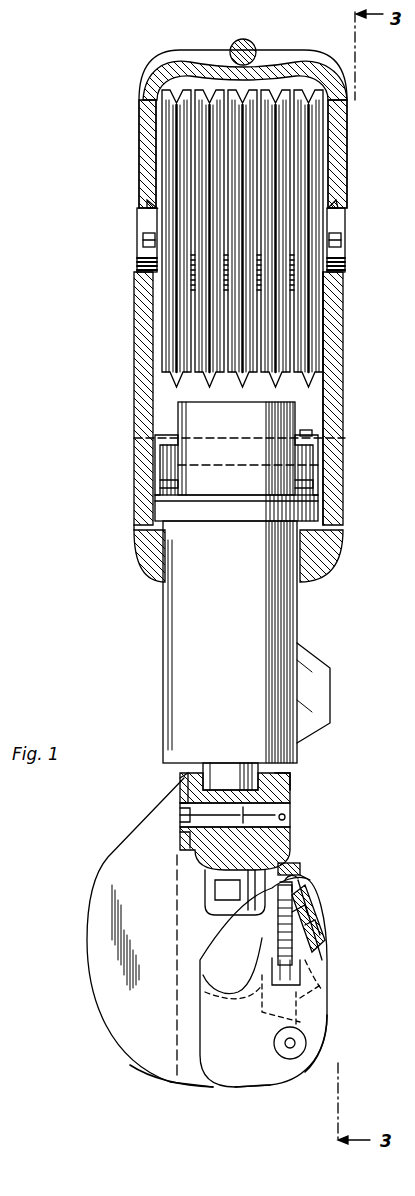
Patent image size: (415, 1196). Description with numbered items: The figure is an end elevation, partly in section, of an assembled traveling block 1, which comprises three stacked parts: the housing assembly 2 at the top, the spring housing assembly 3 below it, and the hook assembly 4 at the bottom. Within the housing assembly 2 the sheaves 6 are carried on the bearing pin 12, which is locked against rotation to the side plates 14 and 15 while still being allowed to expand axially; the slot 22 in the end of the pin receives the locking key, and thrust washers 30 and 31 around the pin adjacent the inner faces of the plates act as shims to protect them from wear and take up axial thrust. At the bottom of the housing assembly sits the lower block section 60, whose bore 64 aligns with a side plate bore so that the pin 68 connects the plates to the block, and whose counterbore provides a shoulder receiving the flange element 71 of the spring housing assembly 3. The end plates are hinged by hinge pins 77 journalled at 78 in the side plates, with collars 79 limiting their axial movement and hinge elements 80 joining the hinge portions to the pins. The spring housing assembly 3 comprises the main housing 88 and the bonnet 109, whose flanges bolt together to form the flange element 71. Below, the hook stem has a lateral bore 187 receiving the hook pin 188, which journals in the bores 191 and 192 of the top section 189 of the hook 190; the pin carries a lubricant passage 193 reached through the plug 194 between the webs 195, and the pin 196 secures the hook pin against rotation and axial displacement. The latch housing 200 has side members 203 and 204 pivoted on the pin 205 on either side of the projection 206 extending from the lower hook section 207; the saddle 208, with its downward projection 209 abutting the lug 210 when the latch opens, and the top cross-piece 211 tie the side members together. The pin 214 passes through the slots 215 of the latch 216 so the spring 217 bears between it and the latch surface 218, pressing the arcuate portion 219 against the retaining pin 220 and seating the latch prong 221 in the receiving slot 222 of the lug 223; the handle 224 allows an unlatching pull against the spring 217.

The traveling block 1 is at (346, 331).
The housing assembly 2 is at (345, 173).
The spring housing assembly 3 is at (213, 592).
The hook assembly 4 is at (116, 862).
The sheaves 6 is at (300, 388).
The bearing pin 12 is at (338, 226).
The side plate 14 is at (135, 327).
The side plate 15 is at (338, 392).
The slot 22 is at (141, 238).
The thrust washer 30 is at (140, 205).
The thrust washer 31 is at (333, 204).
The lower block section 60 is at (318, 565).
The bore 64 is at (330, 517).
The pin 68 is at (330, 488).
The flange element 71 is at (225, 510).
The hinge pin 77 is at (318, 440).
The journal 78 is at (340, 460).
The collar 79 is at (318, 433).
The hinge element 80 is at (165, 440).
The main housing 88 is at (247, 659).
The bonnet 109 is at (246, 441).
The lateral bore 187 is at (222, 793).
The hook pin 188 is at (235, 815).
The top section 189 is at (284, 790).
The hook 190 is at (299, 842).
The bore 191 is at (286, 795).
The bore 192 is at (184, 779).
The lubricant passage 193 is at (181, 845).
The plug 194 is at (180, 825).
The webs 195 is at (163, 893).
The pin 196 is at (290, 817).
The latch housing 200 is at (330, 1010).
The side member 203 is at (234, 1075).
The side member 204 is at (318, 945).
The pin 205 is at (283, 1047).
The projection 206 is at (276, 1027).
The lower hook section 207 is at (186, 1073).
The saddle 208 is at (205, 996).
The downward projection 209 is at (270, 1003).
The lug 210 is at (327, 1036).
The top cross-piece 211 is at (300, 864).
The pin 214 is at (282, 970).
The slots 215 is at (285, 960).
The latch 216 is at (283, 903).
The spring 217 is at (295, 950).
The latch surface 218 is at (300, 912).
The arcuate portion 219 is at (290, 900).
The retaining pin 220 is at (295, 892).
The latch prong 221 is at (285, 902).
The receiving slot 222 is at (290, 883).
The lug 223 is at (298, 882).
The handle 224 is at (312, 930).